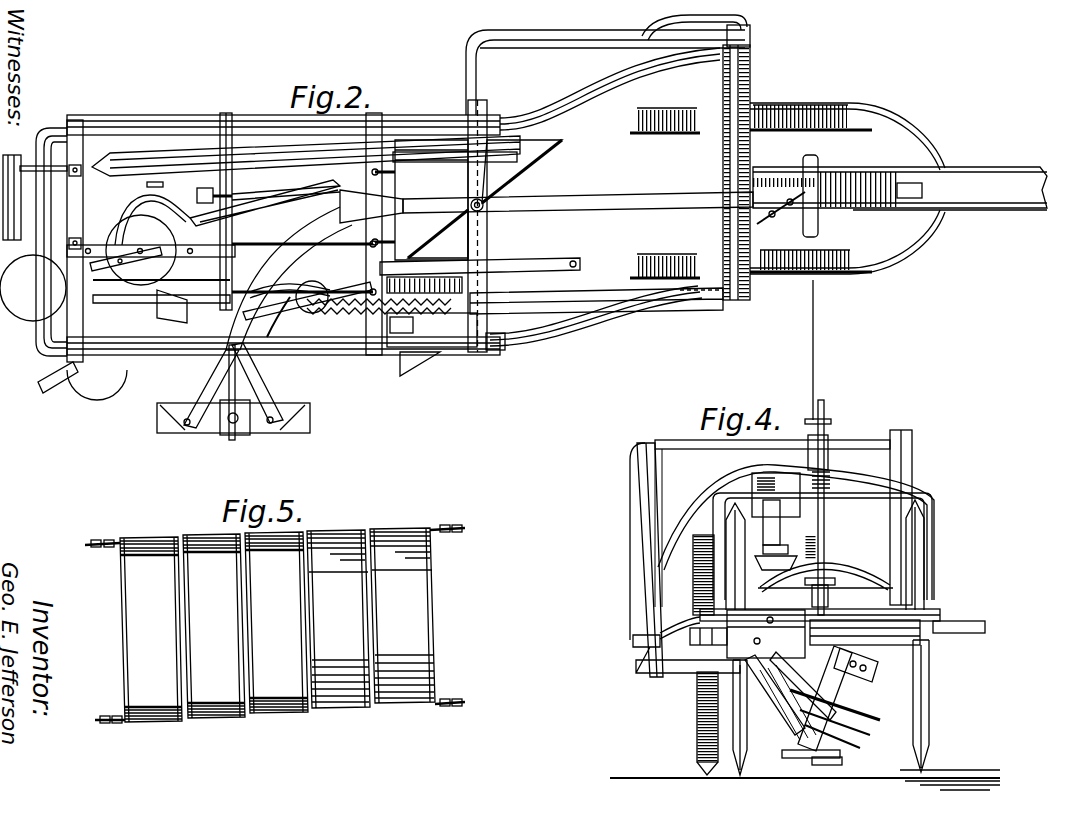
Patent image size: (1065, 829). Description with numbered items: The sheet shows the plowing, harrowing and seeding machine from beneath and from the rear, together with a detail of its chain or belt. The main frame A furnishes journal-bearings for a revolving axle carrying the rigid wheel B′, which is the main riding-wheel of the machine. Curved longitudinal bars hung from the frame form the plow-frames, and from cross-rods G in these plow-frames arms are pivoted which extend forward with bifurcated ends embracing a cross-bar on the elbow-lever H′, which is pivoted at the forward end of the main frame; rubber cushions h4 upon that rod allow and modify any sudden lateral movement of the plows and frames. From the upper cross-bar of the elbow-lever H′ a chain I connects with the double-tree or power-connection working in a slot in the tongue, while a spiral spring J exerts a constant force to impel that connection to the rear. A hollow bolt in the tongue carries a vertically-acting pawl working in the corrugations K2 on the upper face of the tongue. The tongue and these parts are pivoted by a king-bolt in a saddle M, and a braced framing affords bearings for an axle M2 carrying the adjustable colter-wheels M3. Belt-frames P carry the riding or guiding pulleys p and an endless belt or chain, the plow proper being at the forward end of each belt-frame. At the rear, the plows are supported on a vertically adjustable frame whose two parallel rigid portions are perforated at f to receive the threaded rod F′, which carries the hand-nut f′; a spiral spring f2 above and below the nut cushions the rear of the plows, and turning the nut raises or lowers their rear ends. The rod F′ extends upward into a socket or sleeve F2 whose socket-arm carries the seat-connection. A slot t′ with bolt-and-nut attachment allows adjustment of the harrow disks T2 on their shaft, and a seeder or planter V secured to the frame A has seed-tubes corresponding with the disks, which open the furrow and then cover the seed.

In FIG. 2, the main frame A is at (230, 268).
In FIG. 2, the rigid wheel B′ is at (306, 156).
In FIG. 4, the rigid wheel B′ is at (842, 698).
In FIG. 2, the rubber cushions h4 is at (227, 252).
In FIG. 2, the link c′ is at (204, 202).
In FIG. 2, the lever c is at (286, 198).
In FIG. 2, the disks T2 is at (28, 300).
In FIG. 4, the disks T2 is at (837, 730).
In FIG. 2, the cross-rods G is at (160, 316).
In FIG. 2, the belt-frames P is at (483, 301).
In FIG. 2, the pulleys p is at (314, 297).
In FIG. 2, the rod R′ is at (480, 285).
In FIG. 2, the spiral spring J is at (865, 170).
In FIG. 2, the corrugations K2 is at (757, 160).
In FIG. 2, the chain I is at (781, 216).
In FIG. 2, the colter-wheels M3 is at (751, 130).
In FIG. 2, the axle M2 is at (751, 258).
In FIG. 4, the axle M2 is at (796, 540).
In FIG. 2, the elbow-lever H′ is at (728, 150).
In FIG. 4, the elbow-lever H′ is at (665, 462).
In FIG. 4, the socket or sleeve F2 is at (827, 507).
In FIG. 4, the perforations f is at (798, 551).
In FIG. 4, the threaded rod F′ is at (832, 571).
In FIG. 4, the hand-nut f′ is at (824, 579).
In FIG. 4, the spiral spring f2 is at (825, 589).
In FIG. 4, the seeder or planter V is at (766, 634).
In FIG. 4, the saddle M is at (696, 723).
In FIG. 4, the slot t′ is at (835, 705).